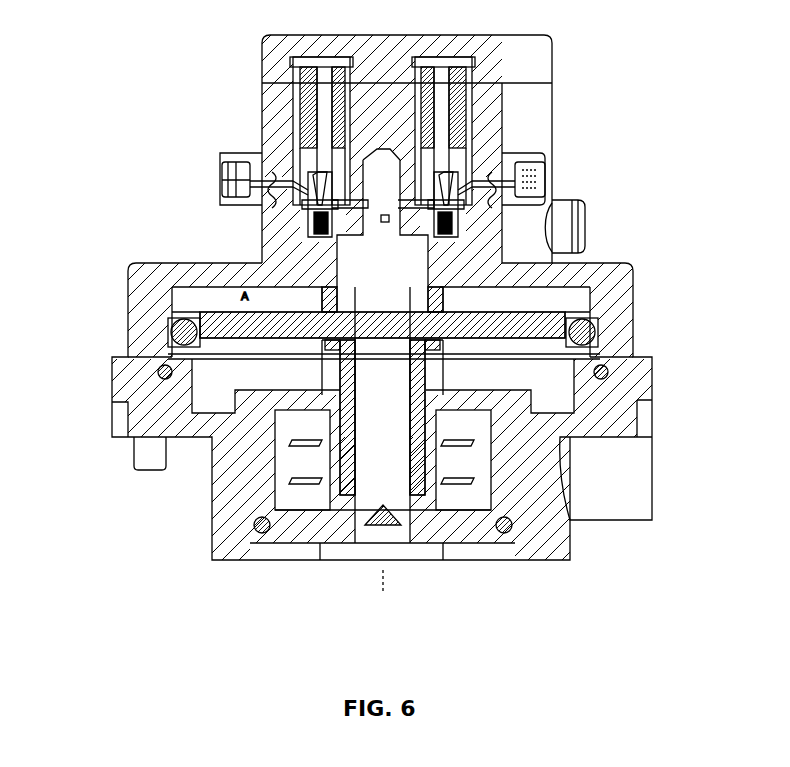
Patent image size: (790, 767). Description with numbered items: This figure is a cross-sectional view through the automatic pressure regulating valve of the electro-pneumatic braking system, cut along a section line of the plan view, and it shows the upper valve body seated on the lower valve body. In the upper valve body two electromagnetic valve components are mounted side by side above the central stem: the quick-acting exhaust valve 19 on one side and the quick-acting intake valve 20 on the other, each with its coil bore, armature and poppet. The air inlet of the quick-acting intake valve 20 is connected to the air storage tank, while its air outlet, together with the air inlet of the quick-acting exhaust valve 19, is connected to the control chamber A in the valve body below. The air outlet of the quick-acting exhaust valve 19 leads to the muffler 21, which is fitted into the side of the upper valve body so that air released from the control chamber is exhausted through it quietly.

The quick-acting exhaust valve 19 is at (303, 155).
The quick-acting intake valve 20 is at (468, 167).
The muffler 21 is at (237, 173).